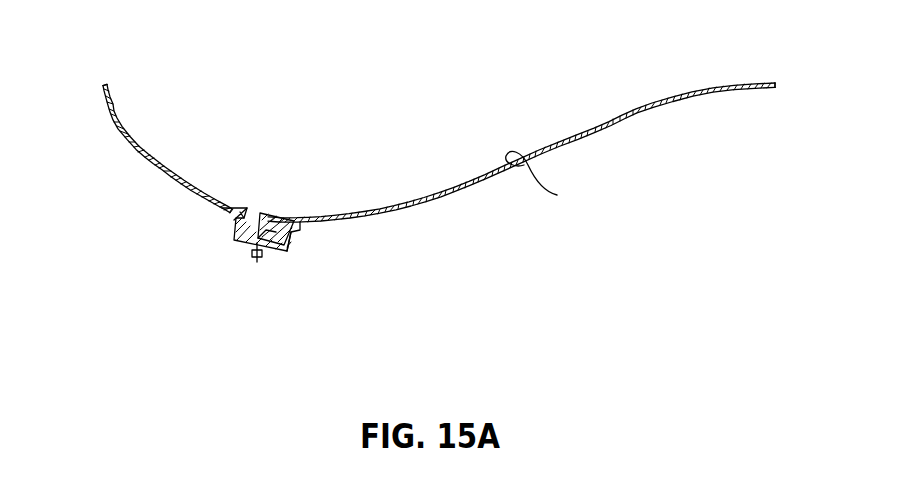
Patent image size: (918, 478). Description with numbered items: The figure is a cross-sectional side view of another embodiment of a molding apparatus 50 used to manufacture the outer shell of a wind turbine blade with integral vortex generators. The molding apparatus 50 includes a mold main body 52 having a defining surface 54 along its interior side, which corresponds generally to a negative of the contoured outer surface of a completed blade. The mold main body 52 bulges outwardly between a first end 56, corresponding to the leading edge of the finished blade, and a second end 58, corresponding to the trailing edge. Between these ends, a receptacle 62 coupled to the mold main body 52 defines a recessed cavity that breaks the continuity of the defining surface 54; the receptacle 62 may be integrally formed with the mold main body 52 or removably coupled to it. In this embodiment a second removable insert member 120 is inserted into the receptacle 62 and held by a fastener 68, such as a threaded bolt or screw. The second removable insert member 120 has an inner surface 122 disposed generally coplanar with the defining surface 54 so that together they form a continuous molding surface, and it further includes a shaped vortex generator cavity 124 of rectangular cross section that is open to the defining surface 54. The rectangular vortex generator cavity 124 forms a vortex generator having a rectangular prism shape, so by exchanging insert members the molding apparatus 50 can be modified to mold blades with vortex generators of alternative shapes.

The molding apparatus 50 is at (492, 217).
The mold main body 52 is at (590, 138).
The defining surface 54 is at (548, 180).
The first end 56 is at (105, 83).
The second end 58 is at (777, 86).
The receptacle 62 is at (288, 250).
The fastener 68 is at (256, 258).
The second removable insert member 120 is at (275, 238).
The inner surface 122 is at (279, 219).
The vortex generator cavity 124 is at (227, 221).